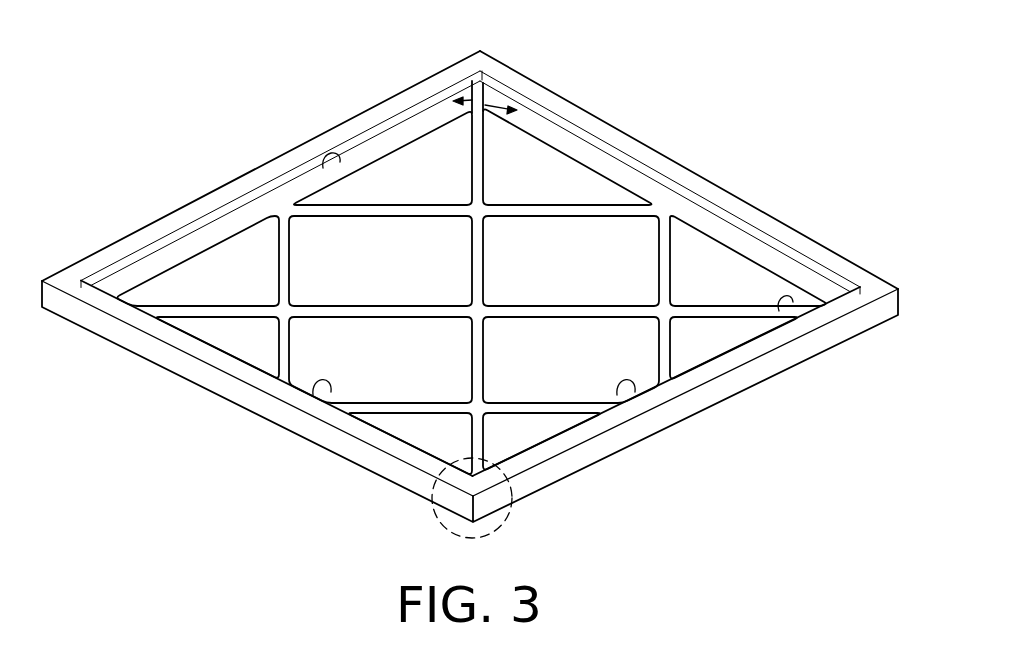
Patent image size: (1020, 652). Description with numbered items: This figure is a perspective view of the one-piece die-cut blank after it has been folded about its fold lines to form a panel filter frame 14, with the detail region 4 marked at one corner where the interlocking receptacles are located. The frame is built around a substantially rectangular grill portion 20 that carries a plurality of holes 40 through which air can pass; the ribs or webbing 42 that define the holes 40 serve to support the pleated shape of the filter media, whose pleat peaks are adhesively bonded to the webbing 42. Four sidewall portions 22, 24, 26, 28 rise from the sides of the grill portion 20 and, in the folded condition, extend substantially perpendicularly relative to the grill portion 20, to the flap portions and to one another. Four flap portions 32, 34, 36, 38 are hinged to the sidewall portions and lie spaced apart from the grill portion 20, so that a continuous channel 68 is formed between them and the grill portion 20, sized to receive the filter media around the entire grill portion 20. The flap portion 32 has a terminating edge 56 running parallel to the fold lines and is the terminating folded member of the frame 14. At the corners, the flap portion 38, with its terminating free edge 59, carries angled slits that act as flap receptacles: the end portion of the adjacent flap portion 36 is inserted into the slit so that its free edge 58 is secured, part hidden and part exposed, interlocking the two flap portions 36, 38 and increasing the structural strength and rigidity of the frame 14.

The detail area of corner 4 is at (438, 526).
The panel filter frame 14 is at (695, 71).
The grill portion 20 is at (475, 291).
The sidewall portion 22 is at (242, 195).
The sidewall portion 24 is at (662, 176).
The sidewall portion 26 is at (690, 410).
The sidewall portion 28 is at (265, 405).
The flap portion 32 is at (280, 165).
The flap portion 34 is at (588, 116).
The flap portion 36 is at (722, 368).
The flap portion 38 is at (232, 362).
The holes 40 is at (714, 273).
The ribs or webbing 42 is at (790, 302).
The terminating edge 56 is at (330, 160).
The free edge 58 is at (625, 388).
The terminating free edge 59 is at (313, 395).
The channel 68 is at (478, 100).